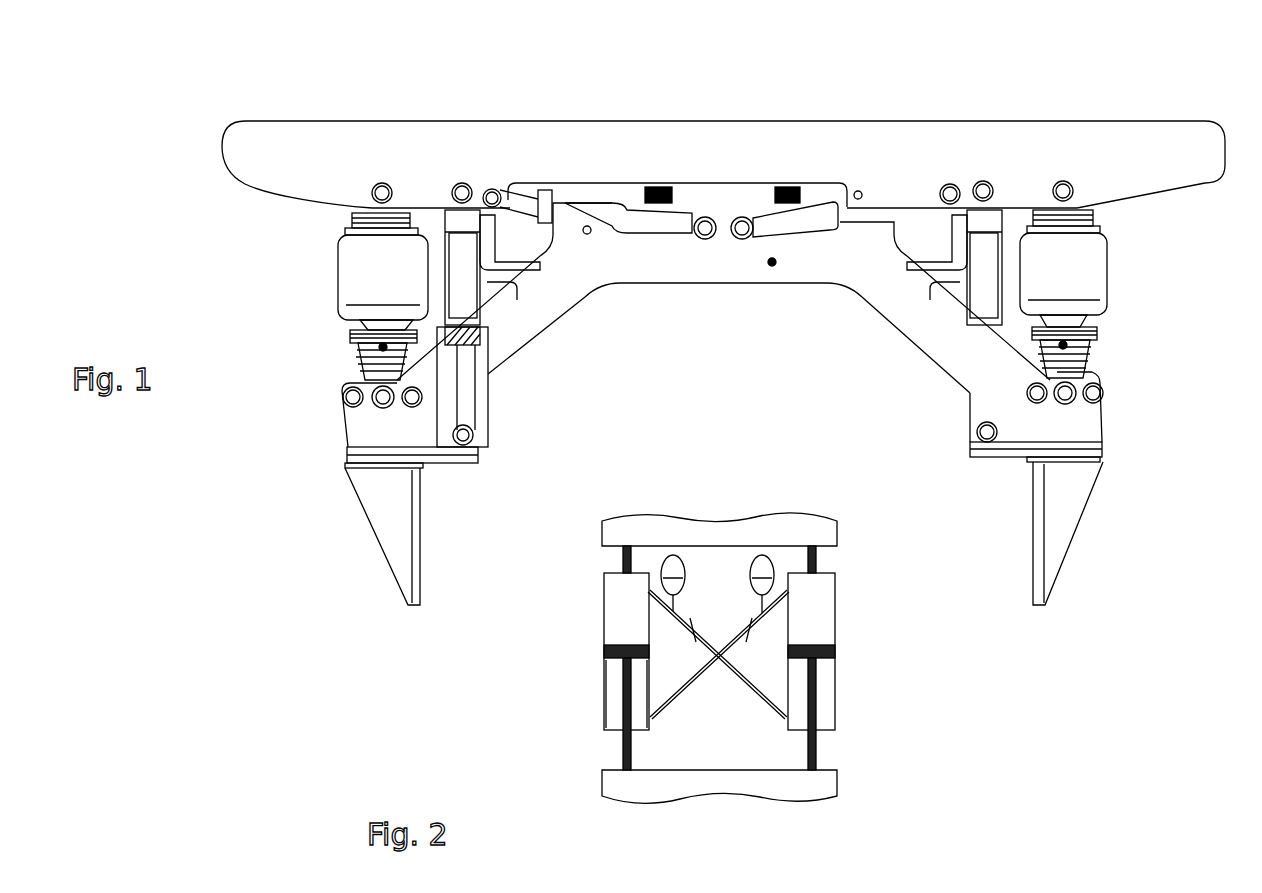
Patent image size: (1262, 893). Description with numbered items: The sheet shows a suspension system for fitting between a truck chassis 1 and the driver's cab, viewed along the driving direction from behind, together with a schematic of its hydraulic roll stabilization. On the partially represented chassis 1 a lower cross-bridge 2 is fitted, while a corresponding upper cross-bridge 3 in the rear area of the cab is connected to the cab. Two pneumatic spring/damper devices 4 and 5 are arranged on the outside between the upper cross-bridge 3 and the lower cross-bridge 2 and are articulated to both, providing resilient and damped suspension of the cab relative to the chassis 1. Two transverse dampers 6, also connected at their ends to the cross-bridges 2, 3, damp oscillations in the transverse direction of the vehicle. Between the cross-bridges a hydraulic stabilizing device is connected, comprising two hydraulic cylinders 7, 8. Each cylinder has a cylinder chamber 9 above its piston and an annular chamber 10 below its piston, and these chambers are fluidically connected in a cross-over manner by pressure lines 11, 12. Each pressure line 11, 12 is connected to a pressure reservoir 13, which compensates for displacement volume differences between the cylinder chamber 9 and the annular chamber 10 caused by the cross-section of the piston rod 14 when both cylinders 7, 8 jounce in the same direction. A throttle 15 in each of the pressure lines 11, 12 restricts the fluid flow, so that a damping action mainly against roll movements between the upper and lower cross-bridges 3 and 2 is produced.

In FIG. 1, the truck chassis 1 is at (390, 510).
In FIG. 1, the lower cross-bridge 2 is at (772, 262).
In FIG. 2, the lower cross-bridge 2 is at (800, 785).
In FIG. 1, the upper cross-bridge 3 is at (320, 138).
In FIG. 2, the upper cross-bridge 3 is at (800, 530).
In FIG. 1, the pneumatic spring/damper device 4 is at (383, 273).
In FIG. 1, the pneumatic spring/damper device 5 is at (1062, 268).
In FIG. 1, the transverse damper 6 is at (632, 217).
In FIG. 1, the hydraulic cylinder 7 is at (463, 295).
In FIG. 2, the hydraulic cylinder 7 is at (580, 660).
In FIG. 1, the hydraulic cylinder 8 is at (983, 292).
In FIG. 2, the hydraulic cylinder 8 is at (850, 660).
In FIG. 2, the cylinder chamber 9 is at (627, 607).
In FIG. 2, the annular chamber 10 is at (615, 698).
In FIG. 1, the pressure line 11 is at (490, 243).
In FIG. 2, the pressure line 11 is at (770, 703).
In FIG. 1, the pressure line 12 is at (955, 240).
In FIG. 2, the pressure line 12 is at (665, 705).
In FIG. 1, the pressure reservoir 13 is at (656, 162).
In FIG. 2, the pressure reservoir 13 is at (763, 547).
In FIG. 2, the piston rod 14 is at (620, 745).
In FIG. 1, the throttle 15 is at (462, 392).
In FIG. 2, the throttle 15 is at (682, 637).